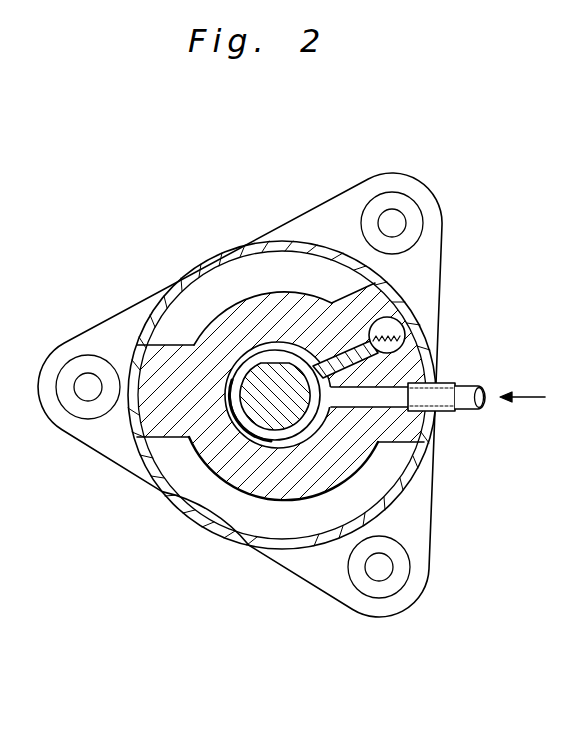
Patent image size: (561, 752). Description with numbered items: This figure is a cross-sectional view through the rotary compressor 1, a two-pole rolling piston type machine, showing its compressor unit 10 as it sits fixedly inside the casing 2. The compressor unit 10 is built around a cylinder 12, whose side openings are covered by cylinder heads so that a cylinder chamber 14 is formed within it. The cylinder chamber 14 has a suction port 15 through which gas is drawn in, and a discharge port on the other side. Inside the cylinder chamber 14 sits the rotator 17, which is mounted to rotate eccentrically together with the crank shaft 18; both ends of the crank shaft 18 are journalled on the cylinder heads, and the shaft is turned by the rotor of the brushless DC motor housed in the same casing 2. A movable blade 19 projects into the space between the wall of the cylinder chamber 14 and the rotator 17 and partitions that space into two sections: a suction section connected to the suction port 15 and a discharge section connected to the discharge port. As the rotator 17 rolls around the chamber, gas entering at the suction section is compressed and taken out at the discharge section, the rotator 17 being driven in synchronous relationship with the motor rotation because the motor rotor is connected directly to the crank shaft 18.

The rotary compressor 1 is at (208, 233).
The casing 2 is at (413, 488).
The compressor unit 10 is at (230, 467).
The cylinder 12 is at (264, 302).
The cylinder chamber 14 is at (314, 430).
The suction port 15 is at (470, 392).
The rotator 17 is at (193, 438).
The crank shaft 18 is at (267, 382).
The movable blade 19 is at (347, 345).